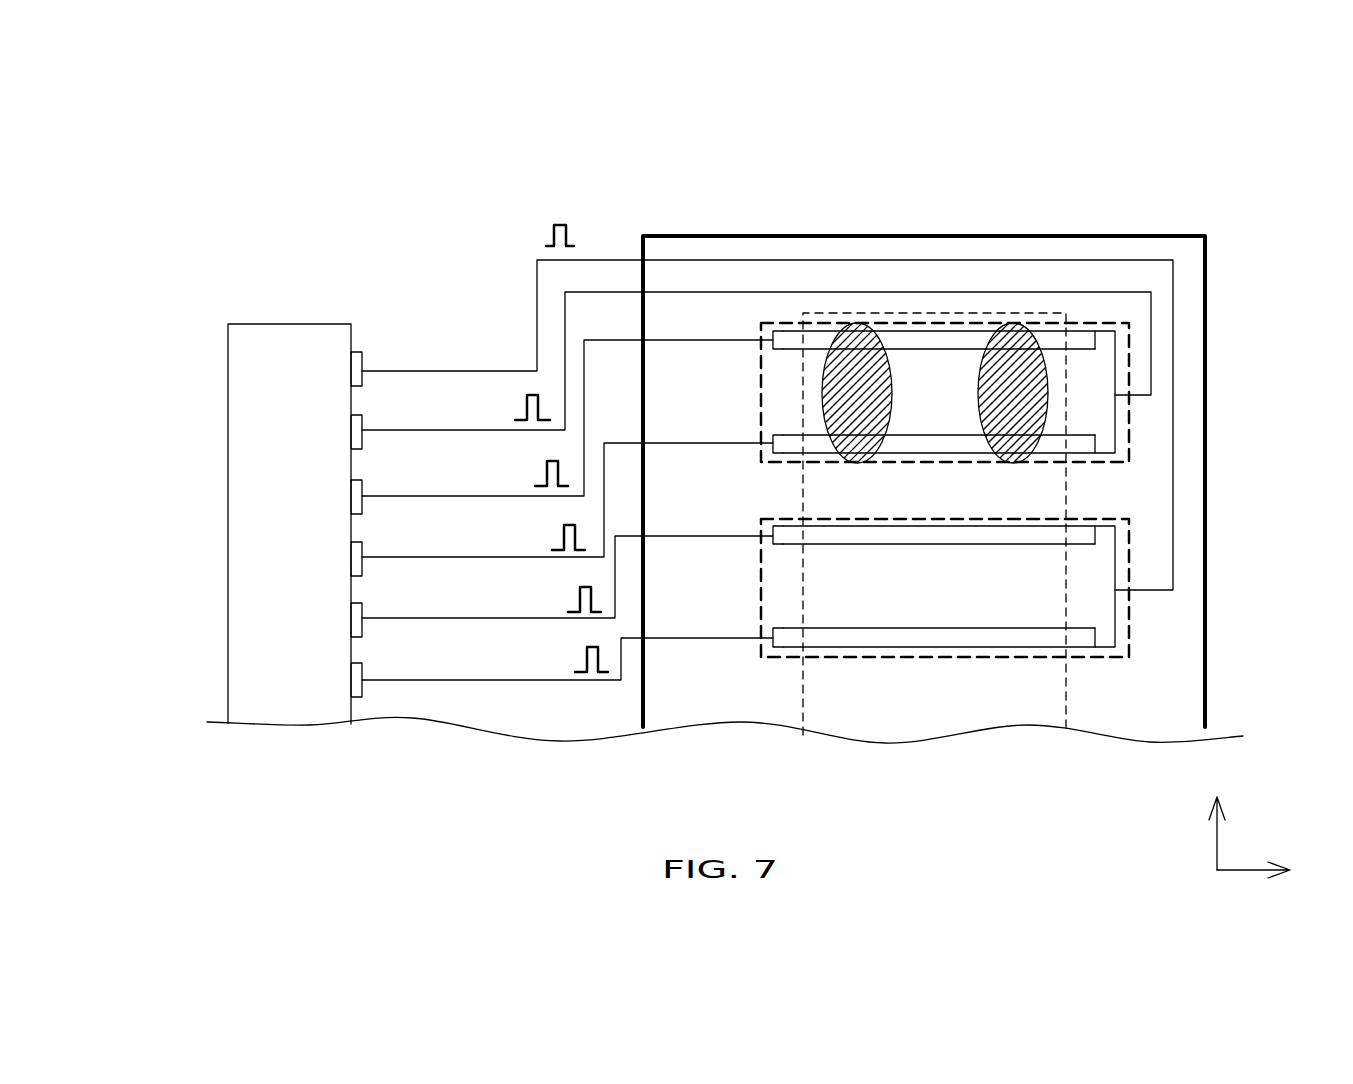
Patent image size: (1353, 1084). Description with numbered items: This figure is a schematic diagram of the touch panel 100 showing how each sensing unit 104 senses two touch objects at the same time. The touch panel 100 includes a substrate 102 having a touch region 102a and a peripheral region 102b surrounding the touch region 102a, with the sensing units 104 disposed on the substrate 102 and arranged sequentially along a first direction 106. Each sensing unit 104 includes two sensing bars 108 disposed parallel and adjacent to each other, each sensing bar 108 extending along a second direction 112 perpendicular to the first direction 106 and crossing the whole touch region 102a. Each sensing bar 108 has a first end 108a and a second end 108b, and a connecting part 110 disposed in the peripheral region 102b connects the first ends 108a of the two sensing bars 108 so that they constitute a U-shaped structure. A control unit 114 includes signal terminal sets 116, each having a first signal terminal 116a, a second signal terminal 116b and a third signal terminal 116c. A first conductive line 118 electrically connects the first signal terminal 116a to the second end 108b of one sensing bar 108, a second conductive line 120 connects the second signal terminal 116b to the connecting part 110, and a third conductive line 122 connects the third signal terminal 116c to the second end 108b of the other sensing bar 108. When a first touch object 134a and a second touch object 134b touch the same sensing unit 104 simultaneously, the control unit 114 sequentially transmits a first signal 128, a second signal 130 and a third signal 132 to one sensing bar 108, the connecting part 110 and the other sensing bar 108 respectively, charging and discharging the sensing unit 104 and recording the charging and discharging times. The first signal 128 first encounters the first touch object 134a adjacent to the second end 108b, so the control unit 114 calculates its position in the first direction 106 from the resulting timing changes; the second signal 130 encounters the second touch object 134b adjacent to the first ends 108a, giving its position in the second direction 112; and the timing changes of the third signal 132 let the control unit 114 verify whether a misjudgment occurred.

The touch panel 100 is at (1198, 170).
The substrate 102 is at (1206, 272).
The touch region 102a is at (1066, 695).
The peripheral region 102b is at (749, 239).
The sensing unit 104 is at (918, 313).
The first direction 106 is at (1215, 818).
The sensing bar 108 is at (927, 350).
The first end 108a is at (1095, 342).
The second end 108b is at (770, 345).
The connecting part 110 is at (1095, 585).
The second direction 112 is at (1274, 869).
The control unit 114 is at (258, 322).
The signal terminal set 116 is at (333, 275).
The first signal terminal 116a is at (362, 483).
The second signal terminal 116b is at (363, 418).
The third signal terminal 116c is at (362, 550).
The first conductive line 118 is at (714, 340).
The second conductive line 120 is at (1100, 292).
The third conductive line 122 is at (668, 443).
The first signal 128 is at (534, 474).
The second signal 130 is at (576, 236).
The third signal 132 is at (551, 538).
The first touch object 134a is at (855, 325).
The second touch object 134b is at (1005, 325).